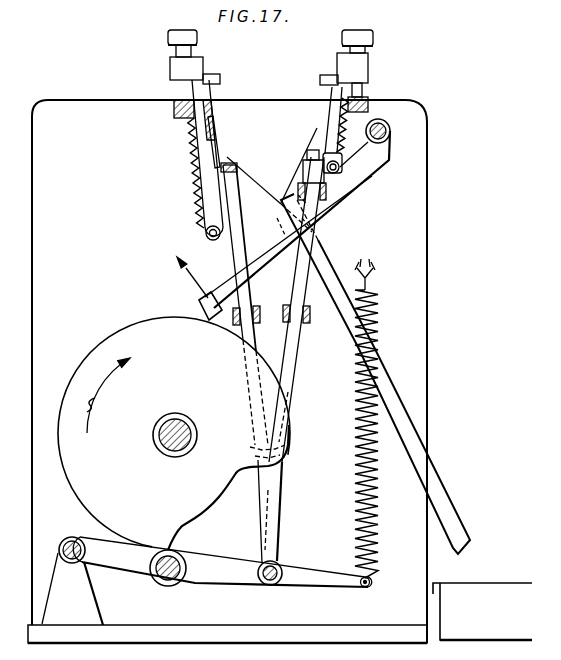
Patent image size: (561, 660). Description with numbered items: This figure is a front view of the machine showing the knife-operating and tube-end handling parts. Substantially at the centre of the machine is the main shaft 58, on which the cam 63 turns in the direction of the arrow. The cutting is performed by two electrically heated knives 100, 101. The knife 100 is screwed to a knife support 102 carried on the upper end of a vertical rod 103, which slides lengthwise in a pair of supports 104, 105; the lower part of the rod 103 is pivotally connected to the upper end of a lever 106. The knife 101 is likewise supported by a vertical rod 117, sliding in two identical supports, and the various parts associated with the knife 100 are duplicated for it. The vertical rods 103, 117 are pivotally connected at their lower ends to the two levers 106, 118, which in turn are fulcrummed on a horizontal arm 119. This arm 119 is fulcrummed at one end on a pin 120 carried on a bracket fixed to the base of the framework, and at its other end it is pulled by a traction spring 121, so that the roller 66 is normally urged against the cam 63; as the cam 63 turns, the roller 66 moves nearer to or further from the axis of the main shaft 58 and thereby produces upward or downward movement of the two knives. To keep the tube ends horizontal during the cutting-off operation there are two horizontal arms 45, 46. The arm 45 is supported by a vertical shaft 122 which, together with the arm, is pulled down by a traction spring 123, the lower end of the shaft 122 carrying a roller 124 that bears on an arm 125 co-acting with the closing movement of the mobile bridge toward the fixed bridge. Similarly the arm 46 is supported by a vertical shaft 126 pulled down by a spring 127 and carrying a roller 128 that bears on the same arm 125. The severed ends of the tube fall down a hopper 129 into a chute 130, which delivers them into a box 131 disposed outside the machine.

The horizontal arm 45 is at (220, 79).
The horizontal arm 46 is at (322, 77).
The main shaft 58 is at (177, 433).
The cam 63 is at (137, 334).
The roller 66 is at (180, 584).
The knife 100 is at (215, 132).
The knife 101 is at (328, 118).
The knife support 102 is at (218, 157).
The vertical rod 103 is at (237, 253).
The support 104 is at (233, 183).
The support 105 is at (250, 307).
The lever 106 is at (265, 528).
The vertical rod 117 is at (310, 235).
The lever 118 is at (278, 478).
The horizontal arm 119 is at (245, 573).
The pin 120 is at (70, 540).
The traction spring 121 is at (363, 348).
The vertical shaft 122 is at (197, 138).
The traction spring 123 is at (200, 174).
The roller 124 is at (207, 230).
The arm 125 is at (360, 168).
The vertical shaft 126 is at (330, 103).
The spring 127 is at (348, 127).
The roller 128 is at (340, 170).
The hopper 129 is at (298, 157).
The chute 130 is at (447, 508).
The box 131 is at (440, 630).